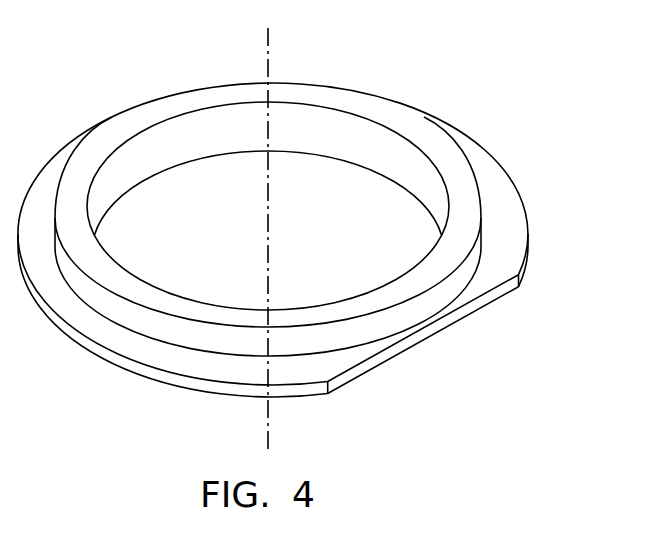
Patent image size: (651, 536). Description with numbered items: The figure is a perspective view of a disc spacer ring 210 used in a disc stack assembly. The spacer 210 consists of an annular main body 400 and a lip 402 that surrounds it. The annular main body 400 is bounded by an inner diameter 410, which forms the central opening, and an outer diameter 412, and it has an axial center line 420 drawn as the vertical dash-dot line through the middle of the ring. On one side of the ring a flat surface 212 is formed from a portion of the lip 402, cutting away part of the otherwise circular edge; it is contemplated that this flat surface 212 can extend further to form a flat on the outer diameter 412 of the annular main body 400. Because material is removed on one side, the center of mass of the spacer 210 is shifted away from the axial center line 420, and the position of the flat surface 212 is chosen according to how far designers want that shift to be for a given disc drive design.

The disc spacer ring 210 is at (378, 71).
The flat surface 212 is at (398, 346).
The annular main body 400 is at (388, 109).
The lip 402 is at (519, 204).
The inner diameter 410 is at (155, 172).
The outer diameter 412 is at (141, 321).
The axial center line 420 is at (270, 197).